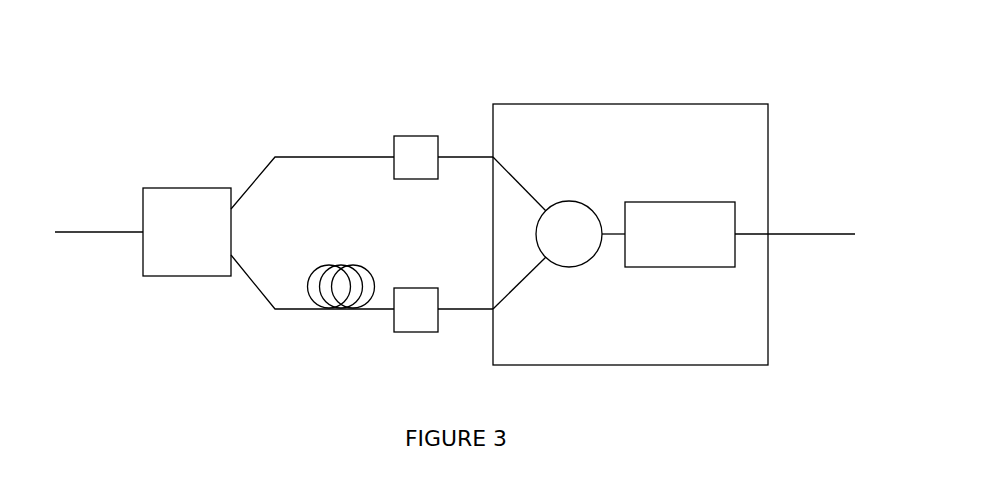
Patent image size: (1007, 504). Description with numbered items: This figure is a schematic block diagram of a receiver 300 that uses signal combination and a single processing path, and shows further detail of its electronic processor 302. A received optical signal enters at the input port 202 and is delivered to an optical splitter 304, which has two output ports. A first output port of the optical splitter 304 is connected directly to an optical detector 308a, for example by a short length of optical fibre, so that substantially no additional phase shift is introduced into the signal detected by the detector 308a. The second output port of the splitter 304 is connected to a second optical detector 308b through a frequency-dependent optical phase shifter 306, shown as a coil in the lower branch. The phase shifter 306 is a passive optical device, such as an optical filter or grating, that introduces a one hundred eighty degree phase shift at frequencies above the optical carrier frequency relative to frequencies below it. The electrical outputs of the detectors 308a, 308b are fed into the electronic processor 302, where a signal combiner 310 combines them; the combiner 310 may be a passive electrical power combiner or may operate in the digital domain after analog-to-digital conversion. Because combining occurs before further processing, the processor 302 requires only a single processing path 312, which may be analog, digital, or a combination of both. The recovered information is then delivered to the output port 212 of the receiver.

The receiver 300 is at (830, 60).
The input port 202 is at (102, 232).
The optical splitter 304 is at (177, 276).
The frequency-dependent optical phase shifter 306 is at (333, 312).
The optical detector 308a is at (410, 136).
The optical detector 308b is at (406, 288).
The electronic processor 302 is at (642, 104).
The signal combiner 310 is at (565, 267).
The single processing path 312 is at (662, 267).
The output port 212 is at (790, 234).